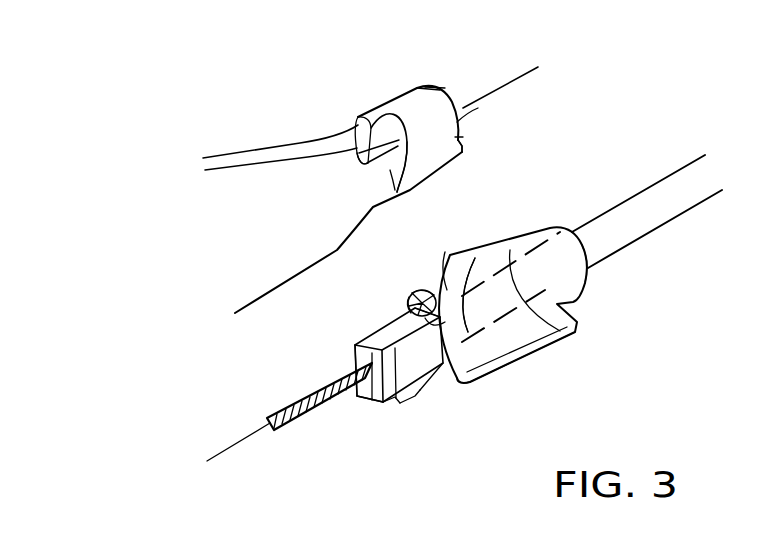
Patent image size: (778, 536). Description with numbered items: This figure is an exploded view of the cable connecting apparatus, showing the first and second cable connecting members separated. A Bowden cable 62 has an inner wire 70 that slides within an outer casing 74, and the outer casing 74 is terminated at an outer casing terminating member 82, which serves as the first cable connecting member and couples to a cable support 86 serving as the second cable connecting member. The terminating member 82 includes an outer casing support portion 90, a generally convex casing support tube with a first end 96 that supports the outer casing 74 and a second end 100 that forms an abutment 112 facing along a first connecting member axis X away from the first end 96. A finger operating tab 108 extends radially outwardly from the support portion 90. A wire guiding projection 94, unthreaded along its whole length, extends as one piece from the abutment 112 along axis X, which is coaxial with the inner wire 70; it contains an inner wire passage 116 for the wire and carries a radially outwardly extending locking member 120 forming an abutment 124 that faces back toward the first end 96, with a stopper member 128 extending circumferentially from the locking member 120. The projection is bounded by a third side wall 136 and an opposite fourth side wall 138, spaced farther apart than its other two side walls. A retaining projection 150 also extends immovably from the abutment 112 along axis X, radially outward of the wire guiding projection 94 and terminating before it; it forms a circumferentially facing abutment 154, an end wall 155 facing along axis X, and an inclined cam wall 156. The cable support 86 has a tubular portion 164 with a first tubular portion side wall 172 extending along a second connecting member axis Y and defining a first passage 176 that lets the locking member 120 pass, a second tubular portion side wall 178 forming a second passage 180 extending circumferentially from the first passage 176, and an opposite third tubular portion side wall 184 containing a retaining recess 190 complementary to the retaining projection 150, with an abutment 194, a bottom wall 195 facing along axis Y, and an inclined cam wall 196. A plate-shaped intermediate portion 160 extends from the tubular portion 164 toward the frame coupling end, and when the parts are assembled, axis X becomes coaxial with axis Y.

The Bowden cable 62 is at (670, 250).
The inner wire 70 is at (298, 402).
The outer casing 74 is at (628, 204).
The outer casing terminating member 82 is at (539, 215).
The cable support 86 is at (266, 157).
The outer casing support portion 90 is at (480, 258).
The wire guiding projection 94 is at (375, 343).
The first end 96 is at (588, 290).
The second end 100 is at (407, 300).
The finger operating tab 108 is at (524, 370).
The abutment 112 is at (453, 383).
The inner wire passage 116 is at (355, 365).
The locking member 120 is at (399, 408).
The abutment 124 is at (412, 392).
The stopper member 128 is at (357, 400).
The third side wall 136 is at (396, 330).
The fourth side wall 138 is at (430, 390).
The retaining projection 150 is at (425, 291).
The abutment 154 is at (450, 250).
The end wall 155 is at (383, 354).
The cam wall 156 is at (404, 300).
The intermediate portion 160 is at (234, 246).
The tubular portion 164 is at (355, 85).
The first tubular portion side wall 172 is at (410, 100).
The first passage 176 is at (397, 199).
The second tubular portion side wall 178 is at (355, 158).
The second passage 180 is at (335, 163).
The third tubular portion side wall 184 is at (437, 88).
The retaining recess 190 is at (434, 148).
The abutment 194 is at (462, 146).
The bottom wall 195 is at (457, 137).
The cam wall 196 is at (460, 122).
The first connecting member axis X is at (221, 450).
The second connecting member axis Y is at (500, 88).